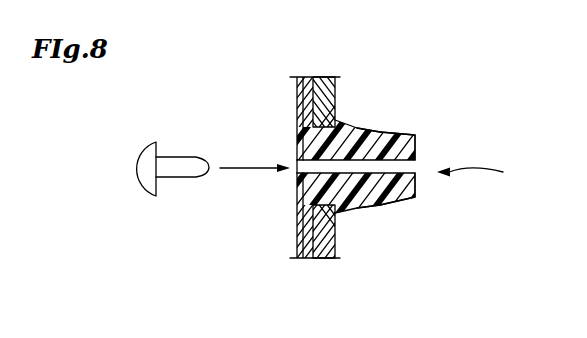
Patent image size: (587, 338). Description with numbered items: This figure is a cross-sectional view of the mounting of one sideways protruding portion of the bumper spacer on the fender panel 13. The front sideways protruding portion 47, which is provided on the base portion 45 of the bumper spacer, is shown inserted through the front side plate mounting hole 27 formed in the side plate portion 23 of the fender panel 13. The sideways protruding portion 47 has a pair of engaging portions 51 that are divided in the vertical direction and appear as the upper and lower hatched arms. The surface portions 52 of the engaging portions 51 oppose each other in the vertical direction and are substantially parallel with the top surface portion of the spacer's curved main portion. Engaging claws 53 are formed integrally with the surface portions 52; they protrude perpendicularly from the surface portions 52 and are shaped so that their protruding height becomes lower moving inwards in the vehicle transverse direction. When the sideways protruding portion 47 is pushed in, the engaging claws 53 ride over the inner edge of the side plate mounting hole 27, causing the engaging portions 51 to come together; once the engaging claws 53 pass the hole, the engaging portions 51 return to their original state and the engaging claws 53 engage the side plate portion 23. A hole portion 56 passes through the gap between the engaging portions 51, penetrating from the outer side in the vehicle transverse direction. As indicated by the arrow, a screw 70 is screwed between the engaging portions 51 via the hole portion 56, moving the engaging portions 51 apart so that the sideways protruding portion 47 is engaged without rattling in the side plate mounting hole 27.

The fender panel 13 is at (345, 253).
The side plate portion 23 is at (335, 83).
The side plate mounting hole 27 is at (310, 203).
The base portion 45 is at (337, 100).
The sideways protruding portion 47 is at (488, 180).
The engaging portions 51 is at (413, 128).
The surface portions 52 is at (373, 127).
The engaging claws 53 is at (352, 127).
The hole portion 56 is at (297, 175).
The screw 70 is at (135, 163).